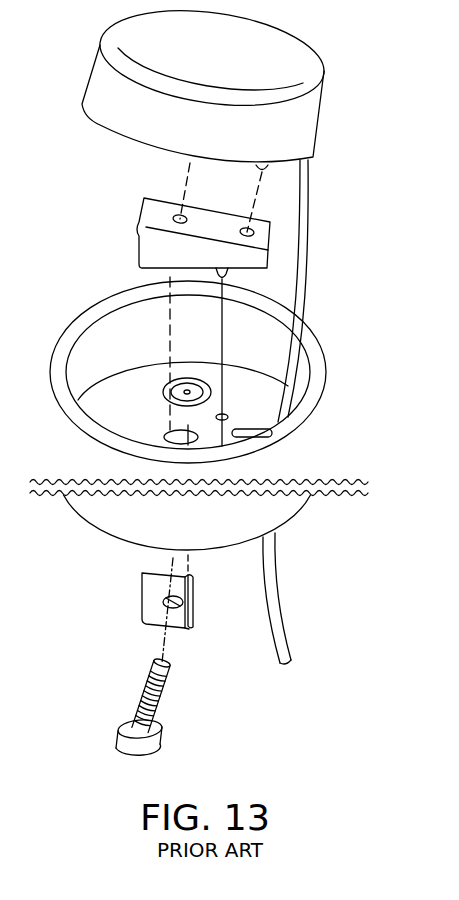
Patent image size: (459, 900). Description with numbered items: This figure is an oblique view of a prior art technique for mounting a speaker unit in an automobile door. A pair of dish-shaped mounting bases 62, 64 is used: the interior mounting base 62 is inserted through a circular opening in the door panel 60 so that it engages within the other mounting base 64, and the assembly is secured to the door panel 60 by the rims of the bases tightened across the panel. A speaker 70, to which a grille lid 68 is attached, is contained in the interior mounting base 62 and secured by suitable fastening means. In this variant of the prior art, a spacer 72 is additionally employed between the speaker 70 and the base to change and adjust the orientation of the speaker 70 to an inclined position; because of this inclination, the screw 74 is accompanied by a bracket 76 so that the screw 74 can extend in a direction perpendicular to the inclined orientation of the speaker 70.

The door panel 60 is at (354, 465).
The interior mounting base 62 is at (317, 355).
The mounting base 64 is at (123, 527).
The grille lid 68 is at (268, 50).
The speaker 70 is at (307, 122).
The spacer 72 is at (158, 255).
The screw 74 is at (158, 740).
The bracket 76 is at (150, 598).